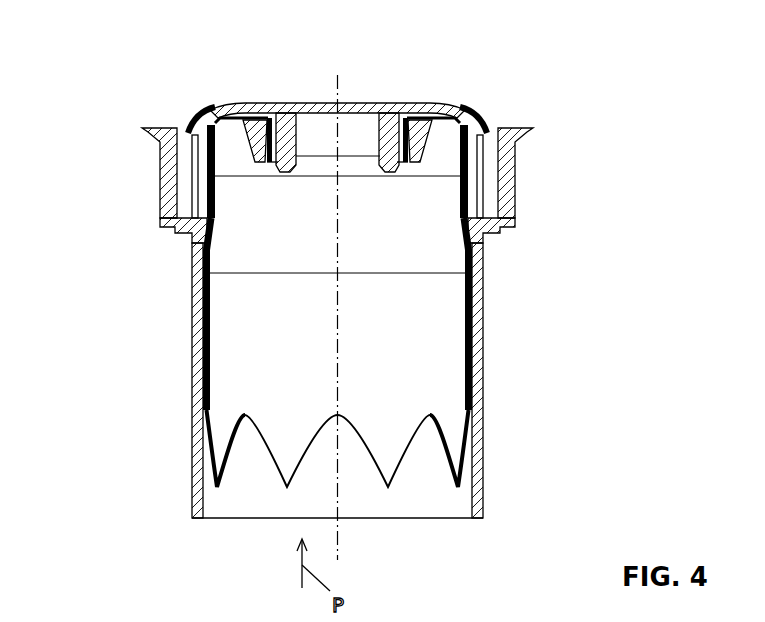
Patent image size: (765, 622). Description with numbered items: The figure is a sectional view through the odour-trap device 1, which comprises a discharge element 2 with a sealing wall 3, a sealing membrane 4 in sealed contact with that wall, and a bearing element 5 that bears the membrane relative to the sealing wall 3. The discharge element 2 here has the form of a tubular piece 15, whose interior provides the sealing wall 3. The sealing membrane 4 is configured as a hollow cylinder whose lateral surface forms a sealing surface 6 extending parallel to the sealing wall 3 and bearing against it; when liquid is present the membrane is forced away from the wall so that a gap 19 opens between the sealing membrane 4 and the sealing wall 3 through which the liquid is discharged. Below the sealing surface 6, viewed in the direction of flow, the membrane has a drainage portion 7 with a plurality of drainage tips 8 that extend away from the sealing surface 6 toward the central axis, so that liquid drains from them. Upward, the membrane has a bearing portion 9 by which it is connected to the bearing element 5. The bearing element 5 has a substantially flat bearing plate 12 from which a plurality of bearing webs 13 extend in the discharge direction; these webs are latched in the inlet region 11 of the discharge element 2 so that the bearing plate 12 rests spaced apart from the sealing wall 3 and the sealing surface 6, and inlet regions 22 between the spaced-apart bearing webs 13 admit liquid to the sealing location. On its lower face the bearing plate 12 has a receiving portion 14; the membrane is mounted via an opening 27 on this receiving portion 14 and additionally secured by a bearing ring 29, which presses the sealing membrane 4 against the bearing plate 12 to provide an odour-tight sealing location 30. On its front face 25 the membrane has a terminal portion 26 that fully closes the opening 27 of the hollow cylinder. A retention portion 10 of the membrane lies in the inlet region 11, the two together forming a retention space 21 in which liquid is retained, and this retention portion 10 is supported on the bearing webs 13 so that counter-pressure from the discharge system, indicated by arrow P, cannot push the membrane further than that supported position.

The odour-trap device 1 is at (483, 345).
The discharge element 2 is at (200, 308).
The sealing wall 3 is at (203, 397).
The sealing membrane 4 is at (203, 378).
The bearing element 5 is at (435, 112).
The sealing surface 6 is at (203, 347).
The drainage portion 7 is at (453, 440).
The drainage tips 8 is at (292, 458).
The bearing portion 9 is at (242, 120).
The retention portion 10 is at (208, 167).
The inlet region 11 is at (175, 195).
The bearing plate 12 is at (350, 105).
The bearing webs 13 is at (186, 131).
The receiving portion 14 is at (258, 125).
The tubular piece 15 is at (472, 270).
The gap 19 is at (205, 328).
The retention space 21 is at (182, 187).
The inlet regions 22 is at (160, 128).
The front face 25 is at (485, 125).
The terminal portion 26 is at (320, 105).
The opening 27 is at (328, 148).
The bearing ring 29 is at (282, 125).
The sealing location 30 is at (213, 104).